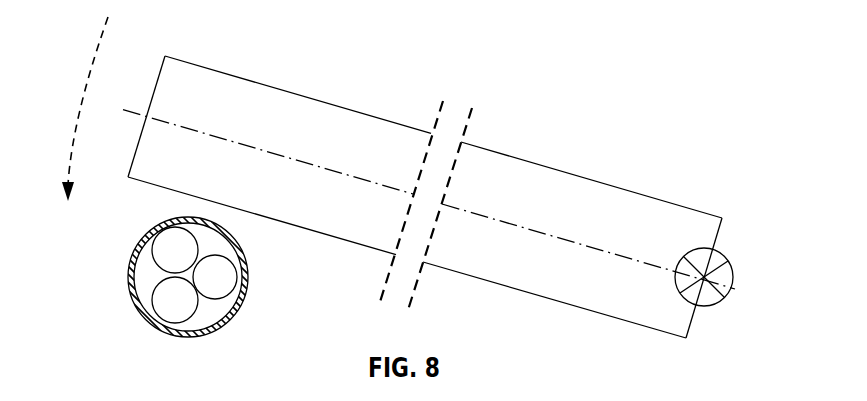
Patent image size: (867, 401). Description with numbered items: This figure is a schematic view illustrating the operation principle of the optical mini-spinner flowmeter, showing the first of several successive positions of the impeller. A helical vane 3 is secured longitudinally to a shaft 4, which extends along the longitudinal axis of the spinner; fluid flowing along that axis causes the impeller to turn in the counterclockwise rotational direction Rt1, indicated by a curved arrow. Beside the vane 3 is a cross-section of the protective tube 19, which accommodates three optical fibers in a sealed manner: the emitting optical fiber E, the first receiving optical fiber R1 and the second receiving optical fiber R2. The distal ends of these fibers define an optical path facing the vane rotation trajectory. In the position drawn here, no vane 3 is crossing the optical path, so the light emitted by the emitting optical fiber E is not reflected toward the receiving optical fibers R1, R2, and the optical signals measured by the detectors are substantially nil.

The vane 3 is at (505, 168).
The shaft 4 is at (722, 273).
The protective tube 19 is at (194, 280).
The first receiving optical fiber R1 is at (159, 264).
The second receiving optical fiber R2 is at (159, 312).
The emitting optical fiber E is at (225, 288).
The rotational direction Rt1 is at (71, 109).